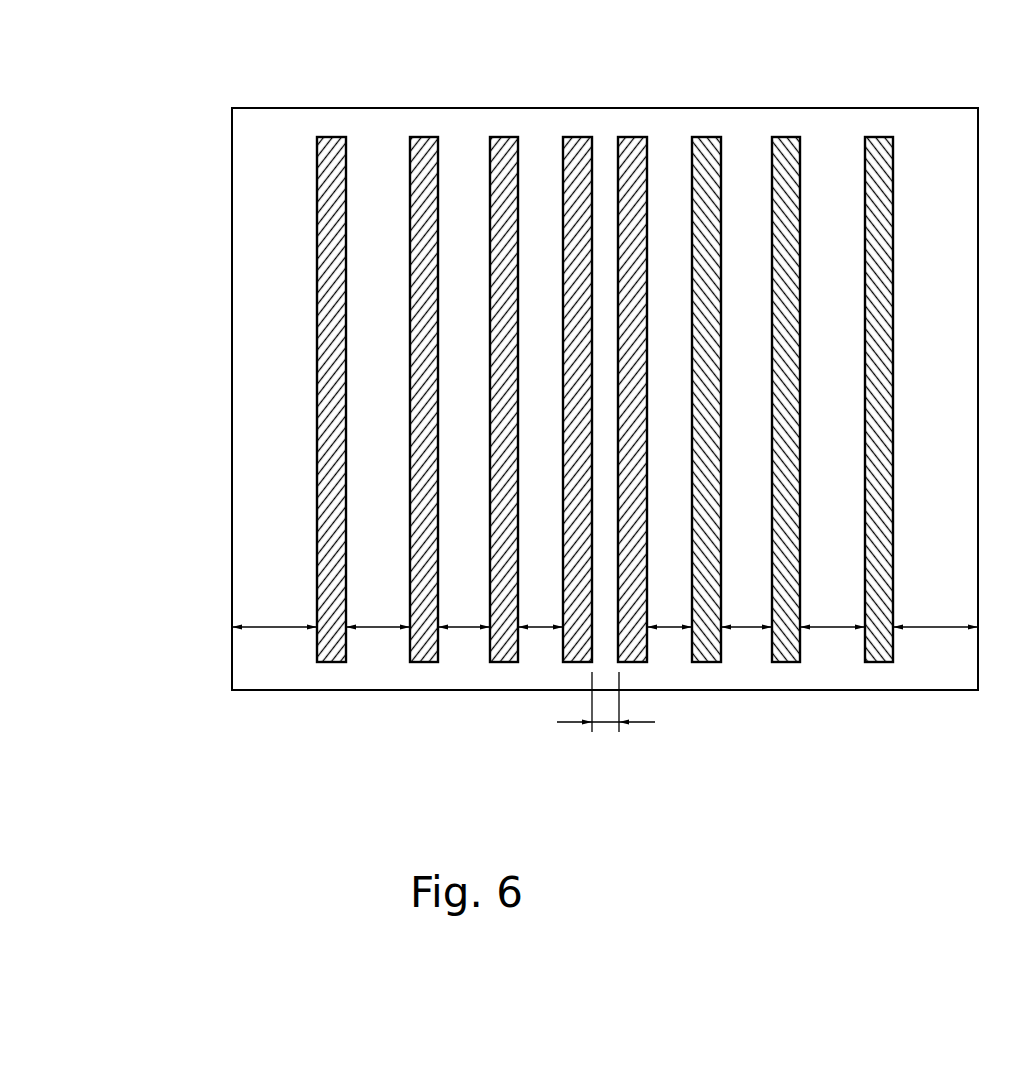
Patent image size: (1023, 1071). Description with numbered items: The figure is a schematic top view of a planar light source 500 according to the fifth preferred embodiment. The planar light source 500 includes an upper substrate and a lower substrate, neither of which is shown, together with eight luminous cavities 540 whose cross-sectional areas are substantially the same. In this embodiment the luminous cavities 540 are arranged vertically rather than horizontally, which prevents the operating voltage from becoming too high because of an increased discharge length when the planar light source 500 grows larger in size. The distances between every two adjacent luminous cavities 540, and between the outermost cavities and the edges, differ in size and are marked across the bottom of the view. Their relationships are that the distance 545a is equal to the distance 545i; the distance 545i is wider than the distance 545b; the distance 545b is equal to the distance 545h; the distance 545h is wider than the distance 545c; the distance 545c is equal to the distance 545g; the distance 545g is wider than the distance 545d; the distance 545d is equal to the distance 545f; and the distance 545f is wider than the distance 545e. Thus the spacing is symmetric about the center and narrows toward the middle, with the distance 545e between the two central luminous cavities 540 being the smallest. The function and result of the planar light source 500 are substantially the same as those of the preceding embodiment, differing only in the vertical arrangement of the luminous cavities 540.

The planar light source 500 is at (148, 90).
The luminous cavities 540 is at (333, 150).
The distance 545a is at (273, 627).
The distance 545b is at (378, 627).
The distance 545c is at (463, 627).
The distance 545d is at (540, 627).
The distance 545e is at (605, 722).
The distance 545f is at (668, 627).
The distance 545g is at (745, 627).
The distance 545h is at (832, 627).
The distance 545i is at (935, 627).